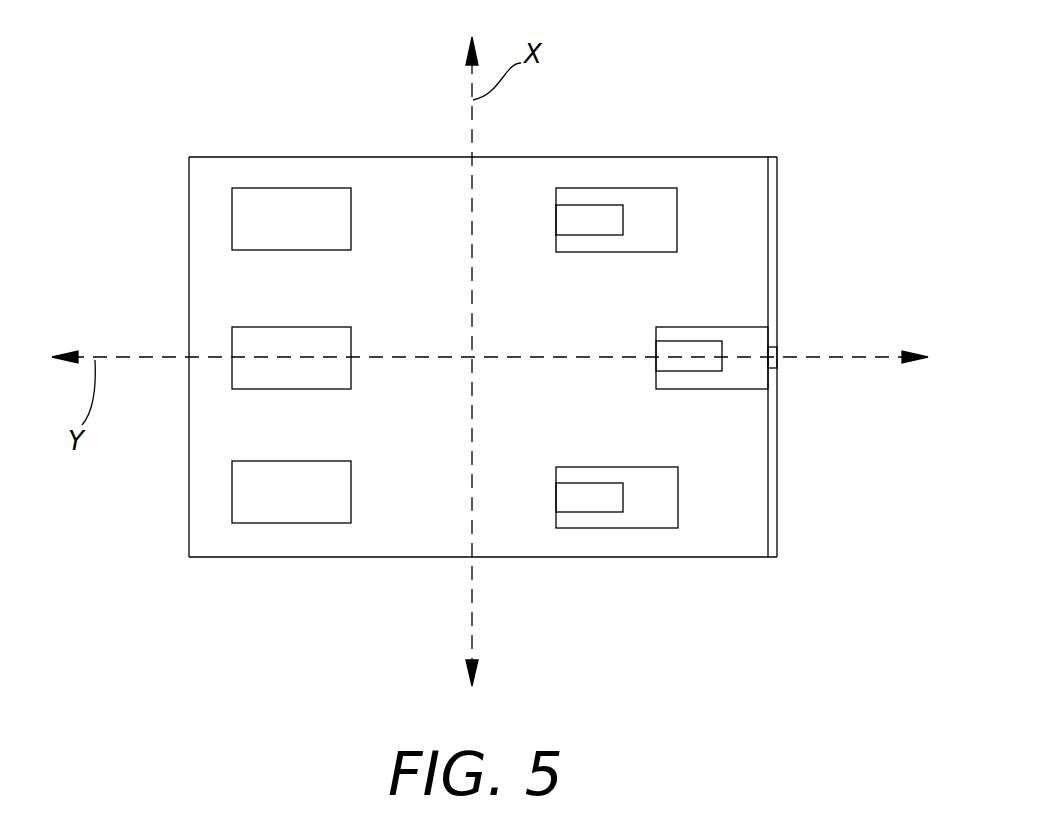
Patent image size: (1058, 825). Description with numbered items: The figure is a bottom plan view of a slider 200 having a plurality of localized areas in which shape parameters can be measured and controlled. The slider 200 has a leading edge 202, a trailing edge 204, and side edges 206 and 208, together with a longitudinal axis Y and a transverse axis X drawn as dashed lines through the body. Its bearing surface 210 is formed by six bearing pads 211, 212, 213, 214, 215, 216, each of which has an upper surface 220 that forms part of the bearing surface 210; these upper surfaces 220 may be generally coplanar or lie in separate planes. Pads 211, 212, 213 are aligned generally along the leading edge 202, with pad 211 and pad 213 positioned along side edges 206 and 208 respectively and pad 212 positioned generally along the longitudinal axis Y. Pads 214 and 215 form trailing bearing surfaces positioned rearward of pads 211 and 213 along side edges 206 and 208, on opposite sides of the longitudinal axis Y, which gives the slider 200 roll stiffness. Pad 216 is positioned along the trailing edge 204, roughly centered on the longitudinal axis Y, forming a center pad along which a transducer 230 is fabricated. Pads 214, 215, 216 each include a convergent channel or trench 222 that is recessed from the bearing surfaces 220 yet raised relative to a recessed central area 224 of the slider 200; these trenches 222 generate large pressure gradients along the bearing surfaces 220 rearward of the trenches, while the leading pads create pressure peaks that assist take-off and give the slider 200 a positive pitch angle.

The slider 200 is at (120, 88).
The leading edge 202 is at (189, 530).
The trailing edge 204 is at (777, 535).
The side edge 206 is at (262, 157).
The side edge 208 is at (275, 557).
The bearing surface 210 is at (238, 210).
The bearing pad 211 is at (352, 210).
The bearing pad 212 is at (352, 336).
The bearing pad 213 is at (352, 475).
The bearing pad 214 is at (678, 207).
The bearing pad 215 is at (679, 493).
The center pad 216 is at (694, 327).
The upper surface 220 is at (305, 203).
The convergent channel 222 is at (567, 220).
The recessed central area 224 is at (556, 326).
The transducer 230 is at (779, 357).